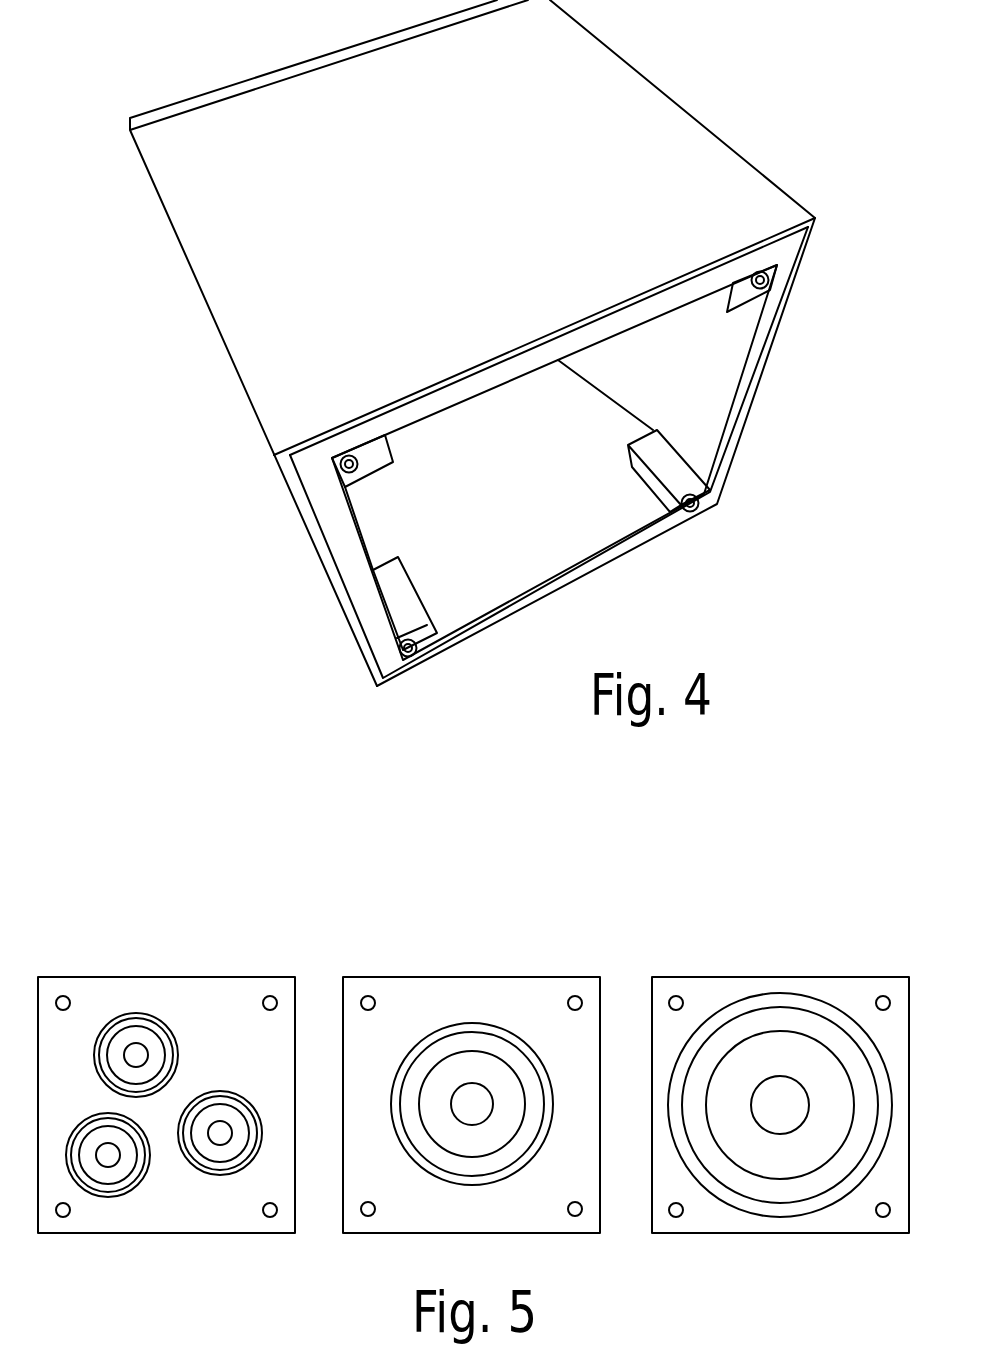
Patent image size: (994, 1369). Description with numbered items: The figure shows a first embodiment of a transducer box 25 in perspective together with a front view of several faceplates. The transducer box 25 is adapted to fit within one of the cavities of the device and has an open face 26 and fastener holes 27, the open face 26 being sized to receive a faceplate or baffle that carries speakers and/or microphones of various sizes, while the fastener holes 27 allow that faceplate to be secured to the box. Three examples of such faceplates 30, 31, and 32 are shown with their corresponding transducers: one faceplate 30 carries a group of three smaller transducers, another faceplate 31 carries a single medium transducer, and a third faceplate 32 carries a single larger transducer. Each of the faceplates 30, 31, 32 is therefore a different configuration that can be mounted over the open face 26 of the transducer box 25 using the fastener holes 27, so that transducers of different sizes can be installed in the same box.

In FIG. 4, the transducer box 25 is at (673, 82).
In FIG. 4, the open face 26 is at (565, 542).
In FIG. 4, the fastener holes 27 is at (695, 503).
In FIG. 5, the faceplate 30 is at (153, 977).
In FIG. 5, the faceplate 31 is at (460, 977).
In FIG. 5, the faceplate 32 is at (782, 977).